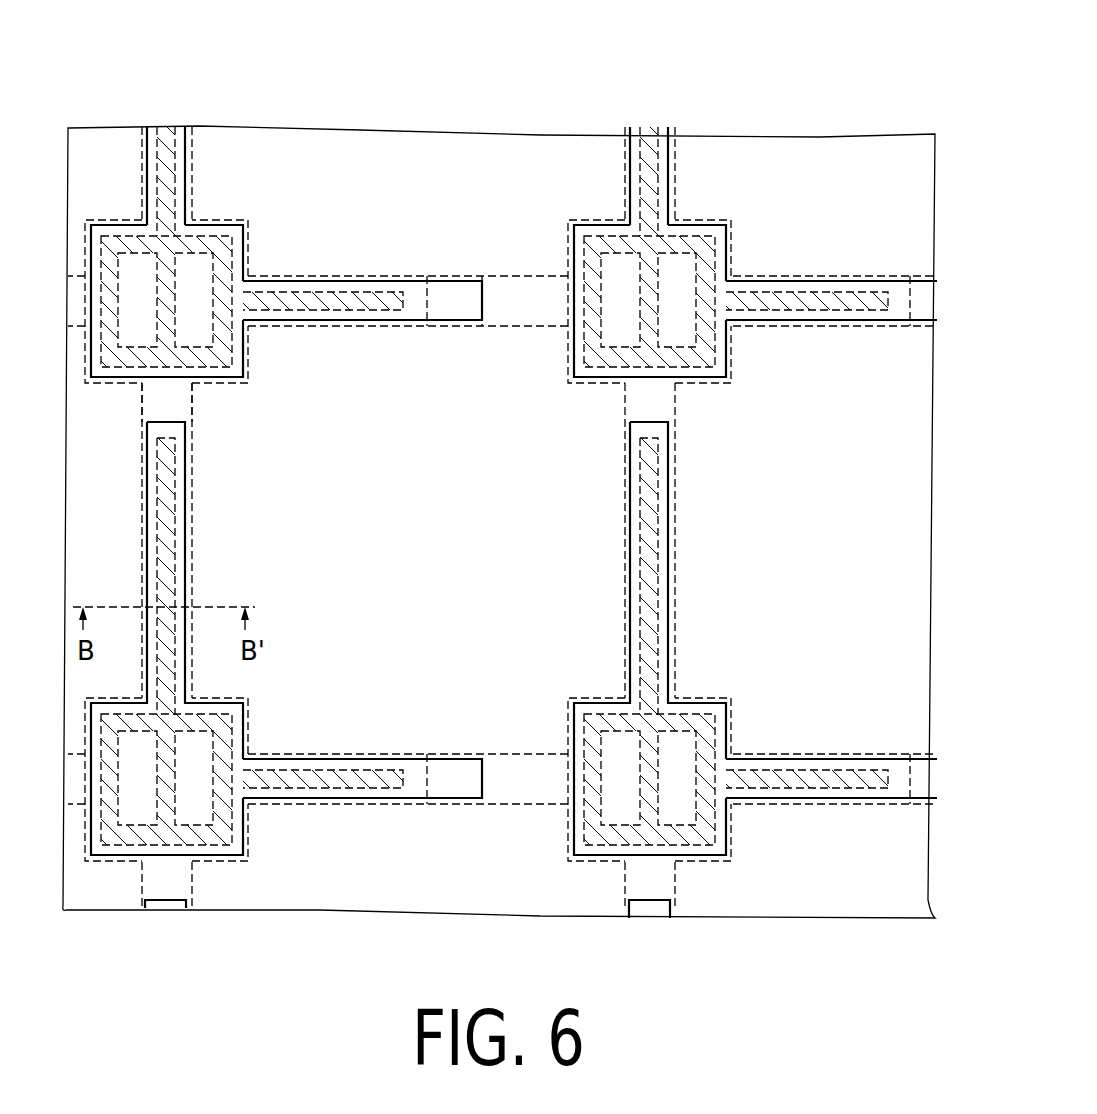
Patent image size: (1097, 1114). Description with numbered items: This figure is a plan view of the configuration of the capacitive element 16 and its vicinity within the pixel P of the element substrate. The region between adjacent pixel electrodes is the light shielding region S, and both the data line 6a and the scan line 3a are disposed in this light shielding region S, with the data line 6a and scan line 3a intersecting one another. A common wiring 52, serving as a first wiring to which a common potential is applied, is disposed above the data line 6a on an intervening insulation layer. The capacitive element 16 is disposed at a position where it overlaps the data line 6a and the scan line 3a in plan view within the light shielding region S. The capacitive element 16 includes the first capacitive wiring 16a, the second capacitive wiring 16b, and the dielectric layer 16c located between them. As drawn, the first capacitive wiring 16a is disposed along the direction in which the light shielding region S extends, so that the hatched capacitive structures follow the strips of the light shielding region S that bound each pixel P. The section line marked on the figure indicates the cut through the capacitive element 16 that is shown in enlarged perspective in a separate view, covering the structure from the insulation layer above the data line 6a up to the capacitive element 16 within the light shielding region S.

The data line 6a is at (142, 158).
The common wiring 52 is at (302, 275).
The scan line 3a is at (545, 275).
The capacitive element 16 is at (366, 387).
The first capacitive wiring 16a is at (360, 312).
The second capacitive wiring 16b is at (450, 310).
The dielectric layer 16c is at (452, 363).
The light shielding region S is at (497, 298).
The pixel P is at (888, 50).